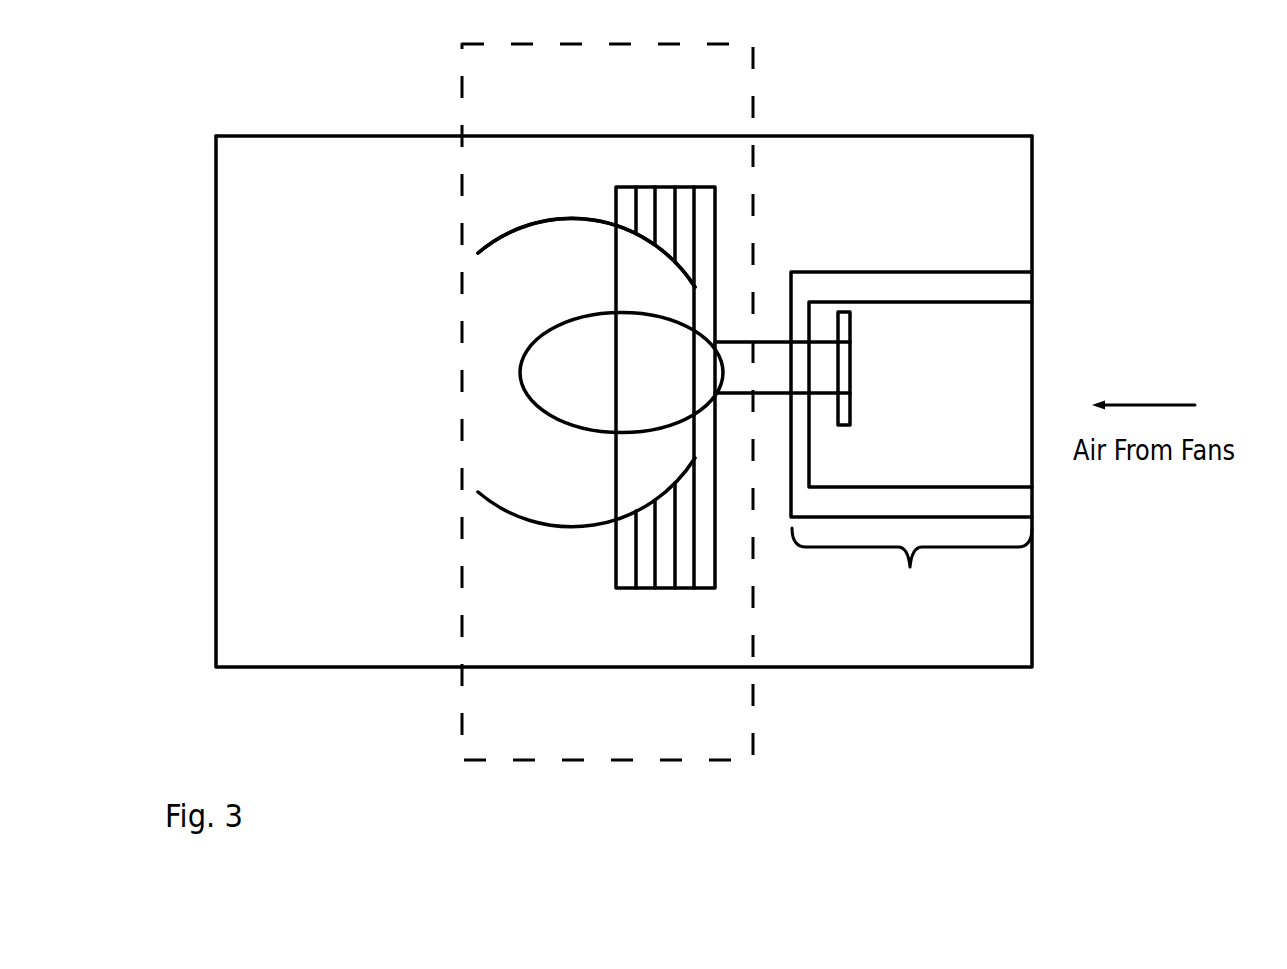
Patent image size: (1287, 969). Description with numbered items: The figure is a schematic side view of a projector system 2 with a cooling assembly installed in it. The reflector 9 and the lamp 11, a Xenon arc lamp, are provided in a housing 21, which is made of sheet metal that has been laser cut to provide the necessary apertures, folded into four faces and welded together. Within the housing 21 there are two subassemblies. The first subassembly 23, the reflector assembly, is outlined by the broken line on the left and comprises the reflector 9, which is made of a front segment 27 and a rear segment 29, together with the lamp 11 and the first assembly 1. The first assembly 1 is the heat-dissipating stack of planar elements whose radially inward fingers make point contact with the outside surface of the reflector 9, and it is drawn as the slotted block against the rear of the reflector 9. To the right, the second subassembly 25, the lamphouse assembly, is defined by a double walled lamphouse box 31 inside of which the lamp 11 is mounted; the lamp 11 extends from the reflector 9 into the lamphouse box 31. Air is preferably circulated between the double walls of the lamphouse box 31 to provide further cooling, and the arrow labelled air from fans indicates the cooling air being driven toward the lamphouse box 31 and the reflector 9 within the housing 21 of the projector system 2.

The first assembly 1 is at (675, 168).
The projector system 2 is at (1066, 133).
The reflector 9 is at (522, 202).
The lamp 11 is at (616, 388).
The housing 21 is at (903, 137).
The first subassembly 23 is at (607, 390).
The second subassembly 25 is at (873, 452).
The front segment 27 is at (538, 242).
The rear segment 29 is at (644, 262).
The lamphouse box 31 is at (1020, 293).